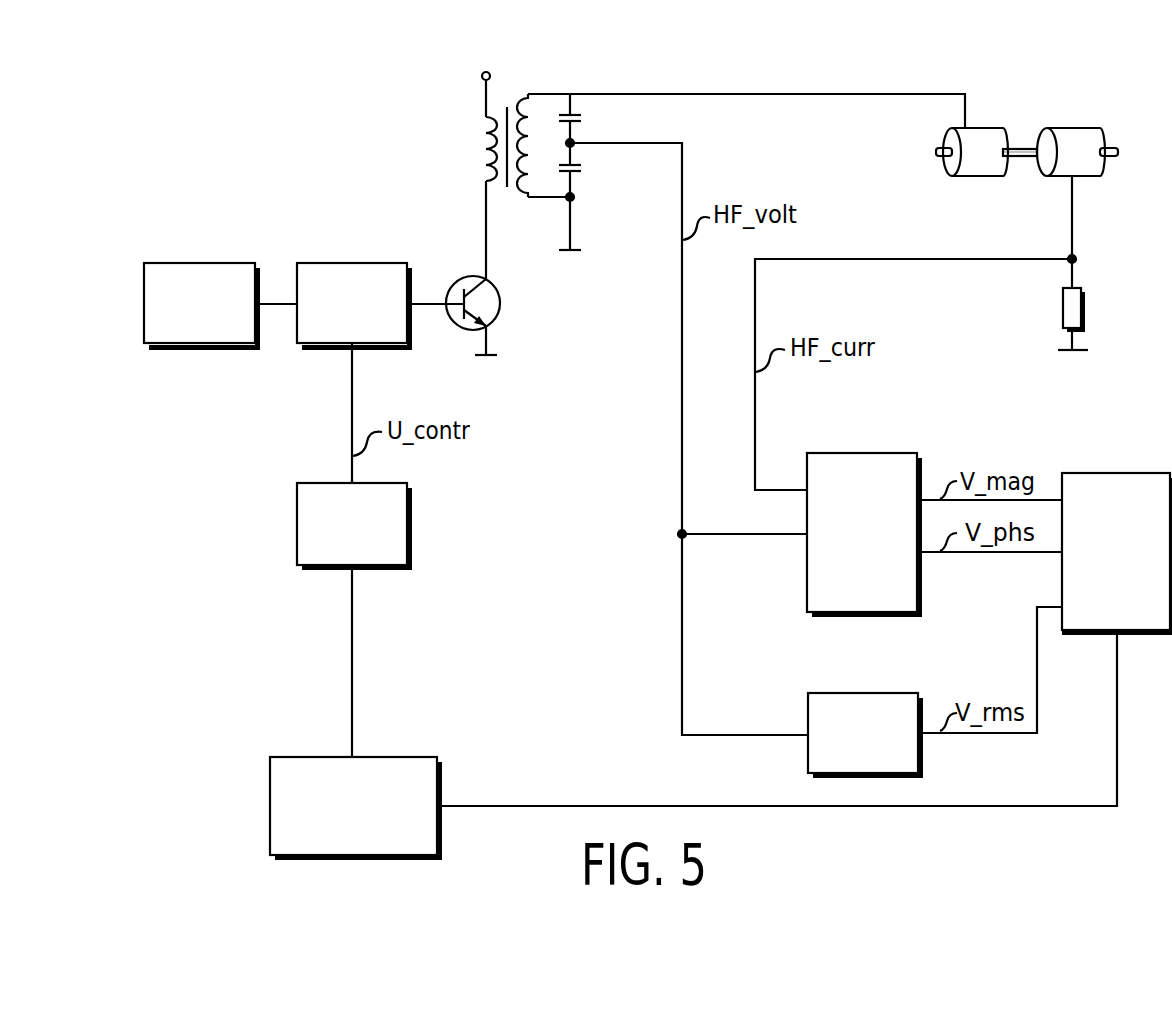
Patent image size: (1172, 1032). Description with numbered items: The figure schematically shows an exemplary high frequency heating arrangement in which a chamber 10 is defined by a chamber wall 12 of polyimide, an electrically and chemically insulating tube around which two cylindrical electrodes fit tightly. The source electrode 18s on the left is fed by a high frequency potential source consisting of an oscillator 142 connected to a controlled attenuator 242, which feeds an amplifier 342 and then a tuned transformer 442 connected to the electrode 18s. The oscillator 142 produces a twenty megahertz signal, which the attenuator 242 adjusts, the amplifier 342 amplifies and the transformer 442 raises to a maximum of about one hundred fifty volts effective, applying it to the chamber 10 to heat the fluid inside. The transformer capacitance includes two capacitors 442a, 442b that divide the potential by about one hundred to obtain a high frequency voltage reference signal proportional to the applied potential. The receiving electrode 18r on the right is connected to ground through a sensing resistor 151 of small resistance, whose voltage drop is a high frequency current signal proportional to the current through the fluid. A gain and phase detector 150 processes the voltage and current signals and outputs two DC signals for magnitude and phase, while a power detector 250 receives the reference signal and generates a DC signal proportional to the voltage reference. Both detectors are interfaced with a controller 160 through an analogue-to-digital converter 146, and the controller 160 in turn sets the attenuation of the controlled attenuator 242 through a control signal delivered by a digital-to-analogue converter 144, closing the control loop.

The oscillator 142 is at (221, 317).
The controlled attenuator 242 is at (374, 317).
The amplifier 342 is at (497, 320).
The tuned transformer 442 is at (462, 150).
The capacitor 442a is at (582, 117).
The capacitor 442b is at (582, 168).
The source electrode 18s is at (985, 125).
The chamber 10 is at (1030, 143).
The receiving electrode 18r is at (1085, 125).
The chamber wall 12 is at (1021, 168).
The sensing resistor 151 is at (1083, 305).
The gain and phase detector 150 is at (884, 546).
The analogue-to-digital converter 146 is at (1138, 566).
The power detector 250 is at (885, 747).
The digital-to-analogue converter 144 is at (374, 536).
The controller 160 is at (372, 817).